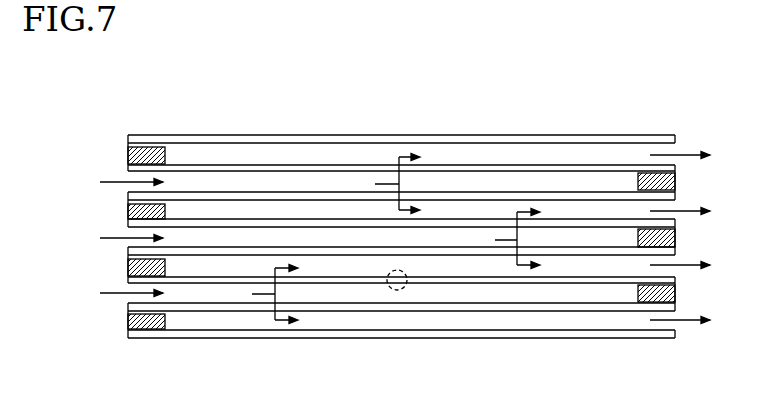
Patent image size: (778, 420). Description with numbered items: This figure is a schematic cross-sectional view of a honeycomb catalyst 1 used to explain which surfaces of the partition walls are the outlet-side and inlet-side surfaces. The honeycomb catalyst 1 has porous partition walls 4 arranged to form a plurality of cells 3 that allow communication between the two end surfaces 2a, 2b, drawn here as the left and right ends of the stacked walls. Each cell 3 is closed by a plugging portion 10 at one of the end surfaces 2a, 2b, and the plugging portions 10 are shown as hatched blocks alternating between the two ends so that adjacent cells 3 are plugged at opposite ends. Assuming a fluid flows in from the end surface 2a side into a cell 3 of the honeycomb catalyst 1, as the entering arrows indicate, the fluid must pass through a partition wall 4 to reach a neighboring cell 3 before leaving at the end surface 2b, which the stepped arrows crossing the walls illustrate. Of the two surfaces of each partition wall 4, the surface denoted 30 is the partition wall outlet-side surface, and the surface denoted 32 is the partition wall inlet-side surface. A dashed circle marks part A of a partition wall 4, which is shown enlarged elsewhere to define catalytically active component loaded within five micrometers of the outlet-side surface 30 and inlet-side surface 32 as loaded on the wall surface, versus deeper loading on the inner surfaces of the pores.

The honeycomb catalyst 1 is at (190, 98).
The end surface 2a is at (127, 127).
The end surface 2b is at (675, 127).
The cell 3 is at (345, 183).
The partition wall 4 is at (463, 278).
The plugging portion 10 is at (145, 328).
The partition wall outlet-side surface 30 is at (577, 219).
The partition wall inlet-side surface 32 is at (253, 247).
The part A is at (402, 290).